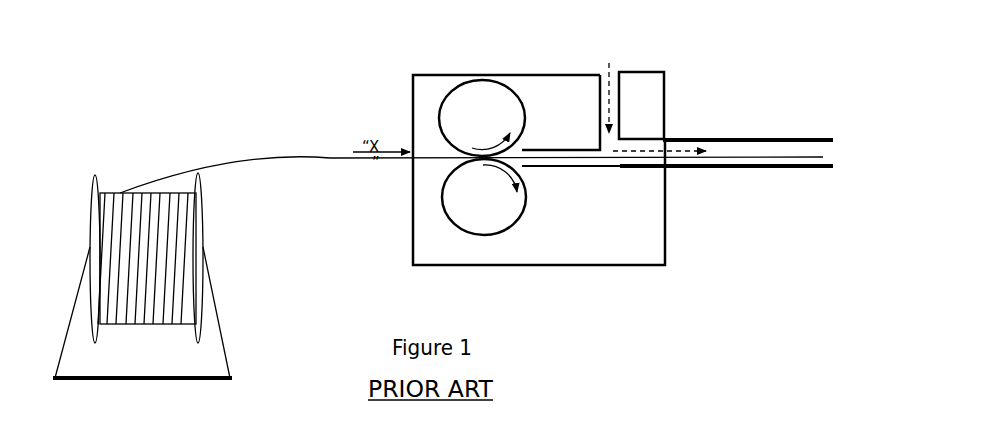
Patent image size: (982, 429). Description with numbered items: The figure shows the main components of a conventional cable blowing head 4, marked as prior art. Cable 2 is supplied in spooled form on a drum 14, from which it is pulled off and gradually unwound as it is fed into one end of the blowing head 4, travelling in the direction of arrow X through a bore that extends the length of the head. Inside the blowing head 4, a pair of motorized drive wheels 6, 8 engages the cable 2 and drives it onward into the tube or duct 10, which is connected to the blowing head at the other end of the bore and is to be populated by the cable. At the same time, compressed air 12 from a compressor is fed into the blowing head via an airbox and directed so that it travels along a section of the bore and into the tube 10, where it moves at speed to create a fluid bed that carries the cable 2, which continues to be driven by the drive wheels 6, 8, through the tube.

The drum 14 is at (97, 156).
The cable 2 is at (183, 210).
The blowing head 4 is at (436, 36).
The motorized drive wheel 8 is at (482, 79).
The motorized drive wheel 6 is at (452, 222).
The compressed air 12 is at (608, 105).
The tube or duct 10 is at (727, 139).